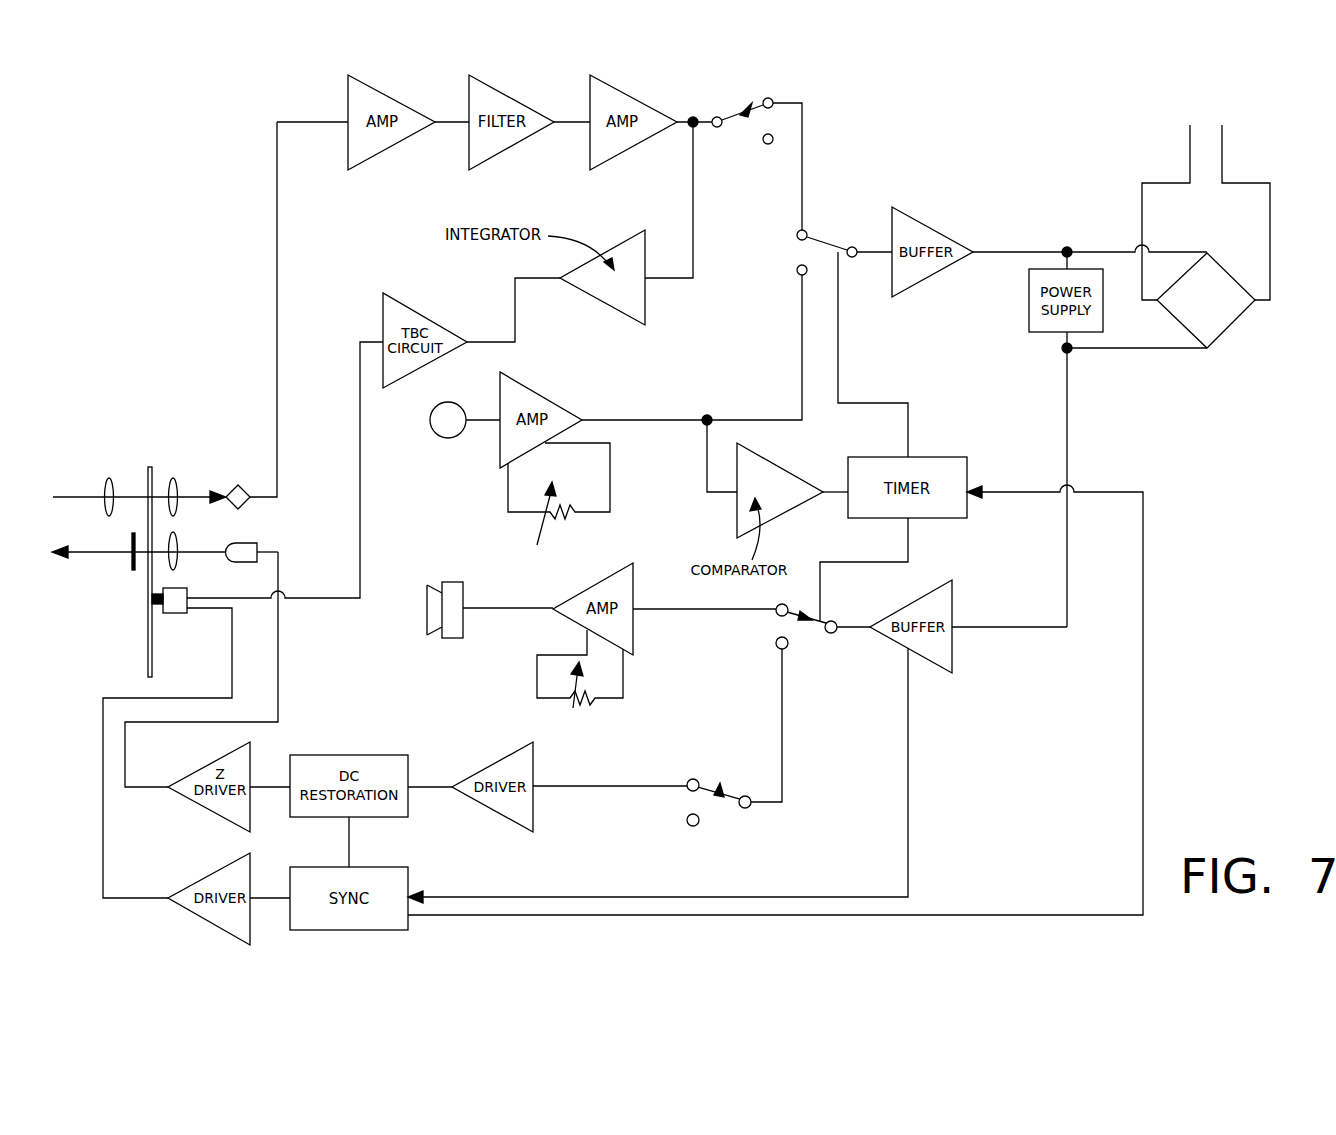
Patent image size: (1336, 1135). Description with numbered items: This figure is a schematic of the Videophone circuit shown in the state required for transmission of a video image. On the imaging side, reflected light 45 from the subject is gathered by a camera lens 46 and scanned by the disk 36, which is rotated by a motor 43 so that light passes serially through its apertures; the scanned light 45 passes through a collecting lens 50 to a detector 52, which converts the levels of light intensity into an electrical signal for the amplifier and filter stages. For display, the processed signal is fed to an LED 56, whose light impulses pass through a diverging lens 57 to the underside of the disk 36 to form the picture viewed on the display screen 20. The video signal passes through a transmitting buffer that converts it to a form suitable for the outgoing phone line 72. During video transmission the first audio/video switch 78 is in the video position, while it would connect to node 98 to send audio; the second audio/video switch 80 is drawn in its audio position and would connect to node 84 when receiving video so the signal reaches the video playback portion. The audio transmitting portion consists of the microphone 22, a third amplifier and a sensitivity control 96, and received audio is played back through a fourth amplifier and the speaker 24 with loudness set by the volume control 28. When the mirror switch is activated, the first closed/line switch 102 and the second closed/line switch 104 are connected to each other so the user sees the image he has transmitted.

The display screen 20 is at (131, 568).
The microphone 22 is at (446, 425).
The speaker 24 is at (427, 608).
The volume control 28 is at (566, 706).
The disk 36 is at (147, 655).
The motor 43 is at (177, 615).
The reflected light 45 is at (82, 495).
The camera lens 46 is at (106, 477).
The collecting lens 50 is at (170, 478).
The detector 52 is at (232, 487).
The LED 56 is at (252, 541).
The diverging lens 57 is at (178, 532).
The outgoing phone line 72 is at (1199, 140).
The first audio/video switch 78 is at (853, 247).
The second audio/video switch 80 is at (830, 635).
The node 84 is at (775, 641).
The sensitivity control 96 is at (559, 510).
The node 98 is at (799, 278).
The first closed/line switch 102 is at (718, 130).
The second closed/line switch 104 is at (748, 810).